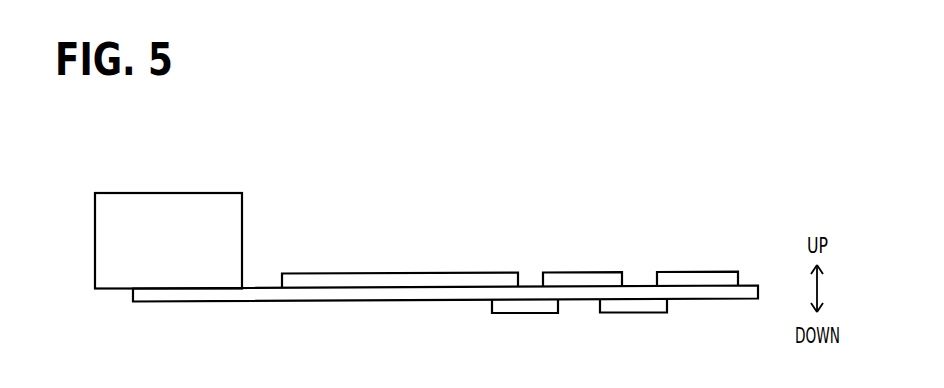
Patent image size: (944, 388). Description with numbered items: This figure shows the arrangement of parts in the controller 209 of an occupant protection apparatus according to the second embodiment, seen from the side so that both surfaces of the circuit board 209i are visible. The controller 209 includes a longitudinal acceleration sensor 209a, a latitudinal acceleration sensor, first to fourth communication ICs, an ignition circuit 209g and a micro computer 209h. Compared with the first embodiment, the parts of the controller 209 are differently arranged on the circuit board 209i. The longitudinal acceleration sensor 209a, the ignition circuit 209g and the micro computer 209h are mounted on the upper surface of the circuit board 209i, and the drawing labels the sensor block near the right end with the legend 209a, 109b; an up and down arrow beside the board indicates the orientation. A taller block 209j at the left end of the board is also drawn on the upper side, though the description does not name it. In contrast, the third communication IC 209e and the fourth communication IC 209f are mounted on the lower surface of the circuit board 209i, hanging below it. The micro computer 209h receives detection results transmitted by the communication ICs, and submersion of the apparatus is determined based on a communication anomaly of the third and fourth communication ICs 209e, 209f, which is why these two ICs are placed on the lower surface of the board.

The controller 209 is at (505, 152).
The circuit board 209i is at (525, 293).
The connector block 209j is at (173, 200).
The micro computer 209h is at (383, 278).
The ignition circuit 209g is at (584, 280).
The longitudinal acceleration sensor 209a is at (702, 249).
The electrode 109b is at (693, 278).
The third communication IC 209e is at (525, 308).
The fourth communication IC 209f is at (633, 308).